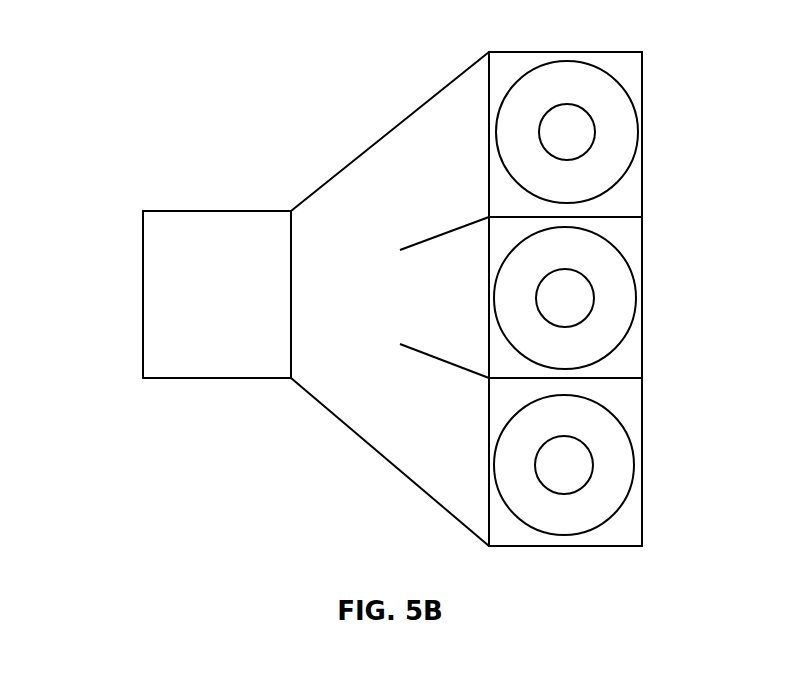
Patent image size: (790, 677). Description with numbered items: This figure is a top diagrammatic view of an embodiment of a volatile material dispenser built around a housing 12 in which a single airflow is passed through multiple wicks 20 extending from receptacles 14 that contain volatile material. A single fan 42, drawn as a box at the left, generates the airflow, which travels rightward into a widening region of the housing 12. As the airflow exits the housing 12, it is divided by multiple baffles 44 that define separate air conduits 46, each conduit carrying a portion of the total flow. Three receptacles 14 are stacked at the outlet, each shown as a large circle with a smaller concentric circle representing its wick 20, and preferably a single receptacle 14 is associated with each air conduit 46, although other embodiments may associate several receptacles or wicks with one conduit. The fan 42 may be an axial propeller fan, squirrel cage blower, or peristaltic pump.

The housing 12 is at (622, 60).
The receptacle 14 is at (617, 157).
The wick 20 is at (567, 132).
The fan 42 is at (155, 260).
The baffle 44 is at (426, 240).
The air conduit 46 is at (405, 137).